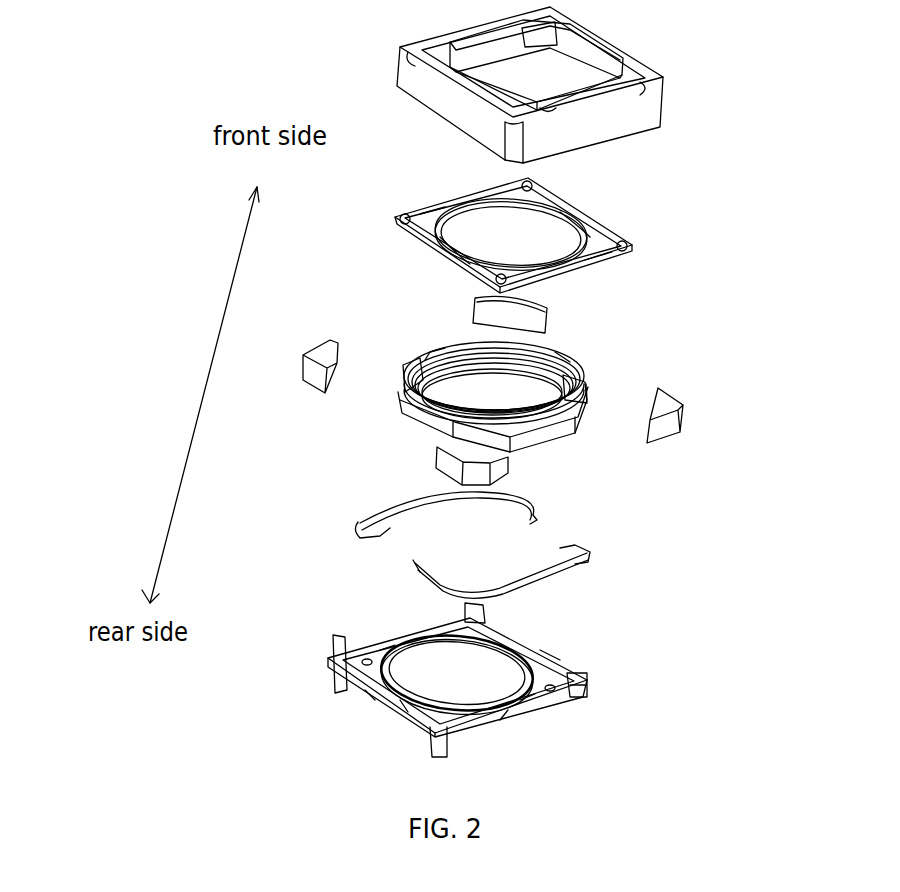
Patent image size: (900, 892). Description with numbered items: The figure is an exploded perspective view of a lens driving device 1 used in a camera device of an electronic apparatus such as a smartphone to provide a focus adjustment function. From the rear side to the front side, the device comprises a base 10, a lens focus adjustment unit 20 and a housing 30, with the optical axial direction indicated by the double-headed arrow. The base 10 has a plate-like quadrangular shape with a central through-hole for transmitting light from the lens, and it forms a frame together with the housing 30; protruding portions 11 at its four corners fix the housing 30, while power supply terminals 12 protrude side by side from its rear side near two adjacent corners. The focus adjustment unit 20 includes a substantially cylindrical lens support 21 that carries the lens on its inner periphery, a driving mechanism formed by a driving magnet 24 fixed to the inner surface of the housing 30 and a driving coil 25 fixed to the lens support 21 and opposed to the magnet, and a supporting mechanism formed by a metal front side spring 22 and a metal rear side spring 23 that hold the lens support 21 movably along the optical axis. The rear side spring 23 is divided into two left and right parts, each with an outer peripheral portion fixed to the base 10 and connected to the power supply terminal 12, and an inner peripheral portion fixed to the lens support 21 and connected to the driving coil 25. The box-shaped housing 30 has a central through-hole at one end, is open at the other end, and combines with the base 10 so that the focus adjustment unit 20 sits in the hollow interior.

The lens driving device 1 is at (96, 101).
The base 10 is at (513, 690).
The protruding portion 11 is at (585, 673).
The power supply terminal 12 is at (446, 753).
The lens focus adjustment unit 20 is at (816, 193).
The lens support 21 is at (560, 370).
The front side spring 22 is at (640, 228).
The rear side spring 23 is at (590, 553).
The driving magnet 24 is at (673, 440).
The driving coil 25 is at (550, 440).
The housing 30 is at (640, 113).